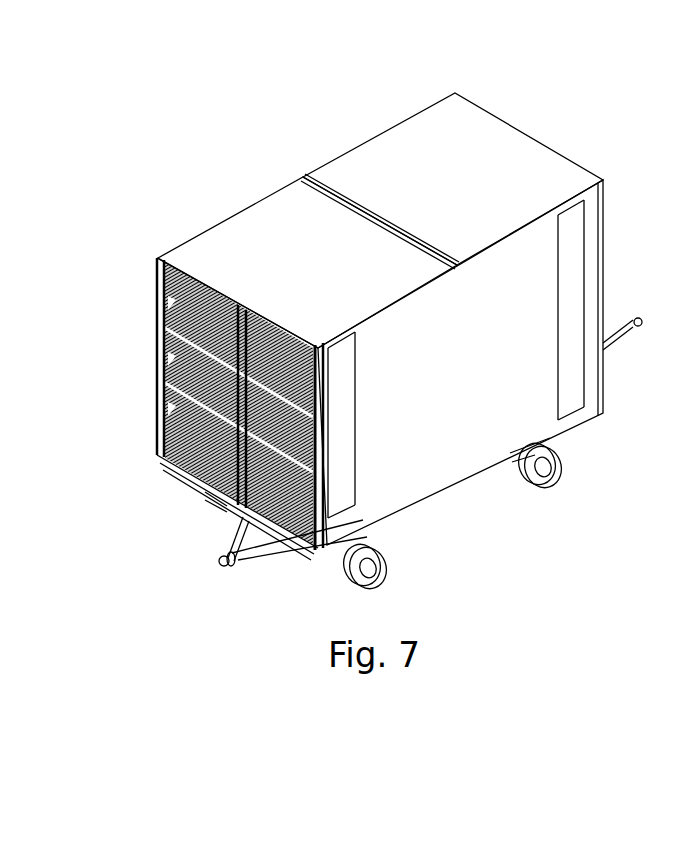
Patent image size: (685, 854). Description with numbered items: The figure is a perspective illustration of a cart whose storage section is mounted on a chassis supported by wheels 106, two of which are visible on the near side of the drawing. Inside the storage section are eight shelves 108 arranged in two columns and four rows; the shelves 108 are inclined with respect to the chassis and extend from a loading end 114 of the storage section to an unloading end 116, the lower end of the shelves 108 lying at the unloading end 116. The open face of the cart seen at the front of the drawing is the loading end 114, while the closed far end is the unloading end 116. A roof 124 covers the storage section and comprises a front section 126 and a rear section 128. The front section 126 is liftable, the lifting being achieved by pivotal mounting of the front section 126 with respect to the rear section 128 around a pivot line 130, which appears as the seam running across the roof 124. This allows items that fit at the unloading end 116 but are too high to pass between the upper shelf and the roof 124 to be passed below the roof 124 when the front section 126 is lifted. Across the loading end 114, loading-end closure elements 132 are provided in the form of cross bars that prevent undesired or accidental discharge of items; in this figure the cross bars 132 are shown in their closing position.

The wheels 106 is at (385, 555).
The shelves 108 is at (198, 340).
The loading end 114 is at (143, 302).
The unloading end 116 is at (610, 155).
The roof 124 is at (380, 201).
The front section 126 is at (265, 230).
The rear section 128 is at (388, 142).
The pivot line 130 is at (383, 222).
The loading-end closure elements 132 is at (293, 497).